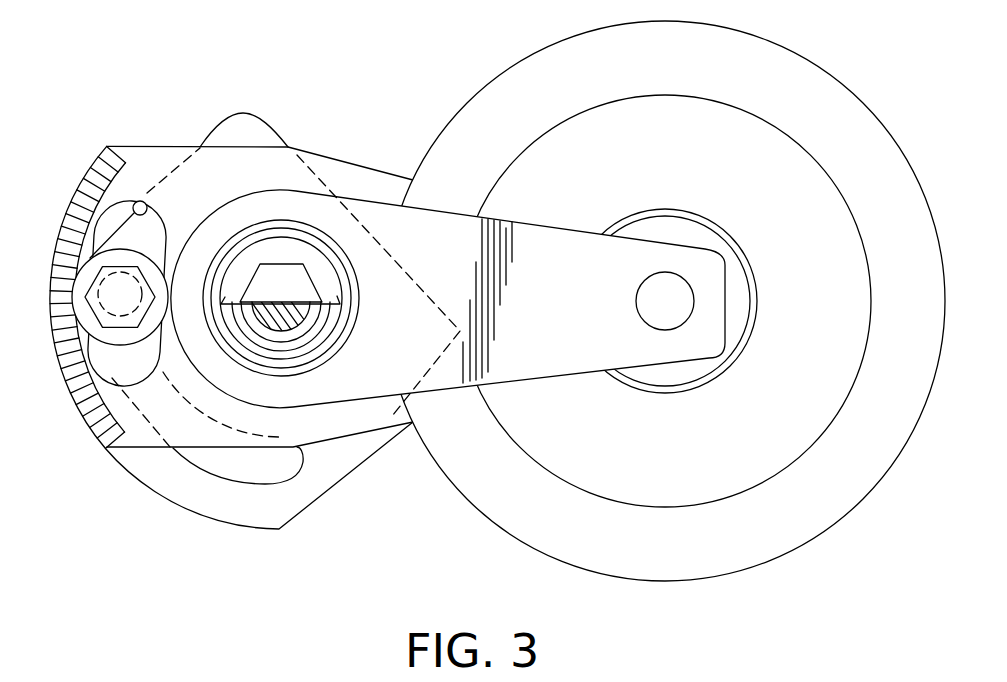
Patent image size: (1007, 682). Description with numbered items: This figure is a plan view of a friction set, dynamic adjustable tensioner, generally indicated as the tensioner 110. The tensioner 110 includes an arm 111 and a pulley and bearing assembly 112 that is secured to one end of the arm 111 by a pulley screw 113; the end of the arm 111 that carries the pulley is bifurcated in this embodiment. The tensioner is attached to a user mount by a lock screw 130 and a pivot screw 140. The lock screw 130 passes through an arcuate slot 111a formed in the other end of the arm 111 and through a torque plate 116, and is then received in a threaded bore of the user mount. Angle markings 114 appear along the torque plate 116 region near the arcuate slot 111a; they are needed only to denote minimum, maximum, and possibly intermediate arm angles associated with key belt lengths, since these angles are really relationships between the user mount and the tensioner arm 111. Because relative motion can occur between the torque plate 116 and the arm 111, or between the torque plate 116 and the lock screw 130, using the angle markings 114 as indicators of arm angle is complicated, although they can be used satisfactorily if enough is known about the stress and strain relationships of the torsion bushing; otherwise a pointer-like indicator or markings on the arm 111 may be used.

The tensioner 110 is at (377, 70).
The arm 111 is at (366, 175).
The arcuate slot 111a is at (134, 203).
The pulley and bearing assembly 112 is at (754, 41).
The pulley screw 113 is at (678, 305).
The angle markings 114 is at (134, 196).
The torque plate 116 is at (322, 474).
The lock screw 130 is at (121, 297).
The pivot screw 140 is at (287, 318).